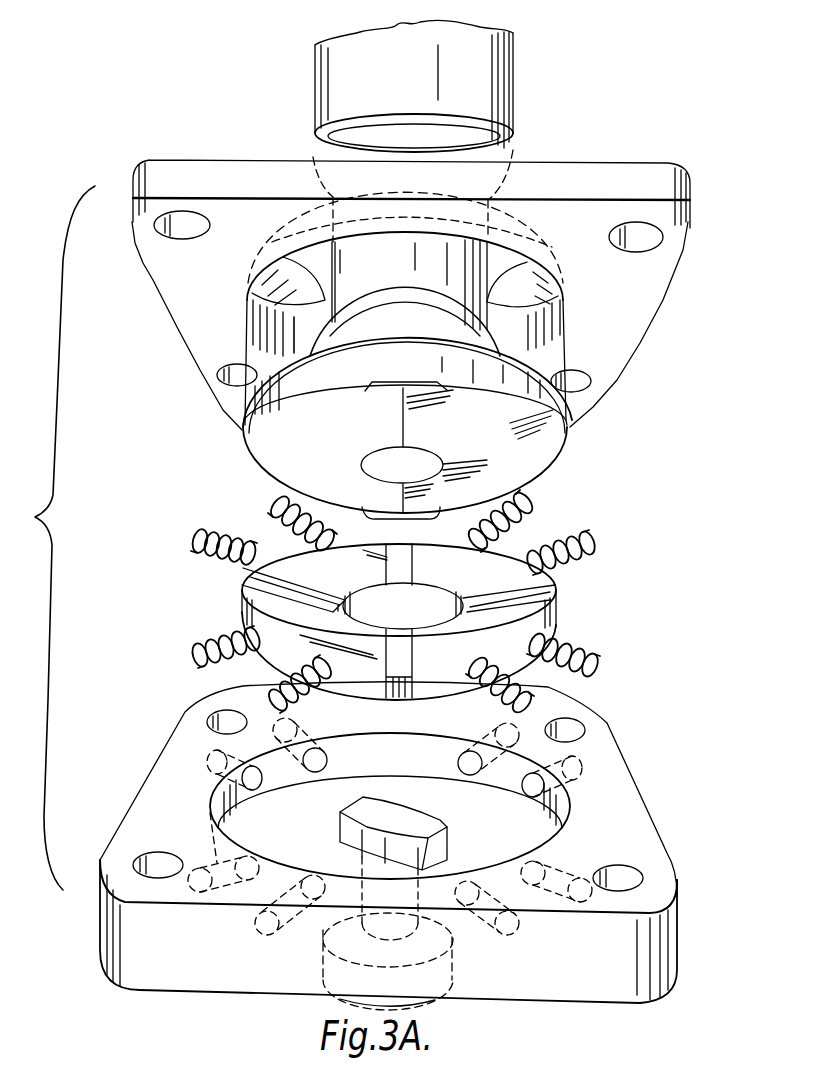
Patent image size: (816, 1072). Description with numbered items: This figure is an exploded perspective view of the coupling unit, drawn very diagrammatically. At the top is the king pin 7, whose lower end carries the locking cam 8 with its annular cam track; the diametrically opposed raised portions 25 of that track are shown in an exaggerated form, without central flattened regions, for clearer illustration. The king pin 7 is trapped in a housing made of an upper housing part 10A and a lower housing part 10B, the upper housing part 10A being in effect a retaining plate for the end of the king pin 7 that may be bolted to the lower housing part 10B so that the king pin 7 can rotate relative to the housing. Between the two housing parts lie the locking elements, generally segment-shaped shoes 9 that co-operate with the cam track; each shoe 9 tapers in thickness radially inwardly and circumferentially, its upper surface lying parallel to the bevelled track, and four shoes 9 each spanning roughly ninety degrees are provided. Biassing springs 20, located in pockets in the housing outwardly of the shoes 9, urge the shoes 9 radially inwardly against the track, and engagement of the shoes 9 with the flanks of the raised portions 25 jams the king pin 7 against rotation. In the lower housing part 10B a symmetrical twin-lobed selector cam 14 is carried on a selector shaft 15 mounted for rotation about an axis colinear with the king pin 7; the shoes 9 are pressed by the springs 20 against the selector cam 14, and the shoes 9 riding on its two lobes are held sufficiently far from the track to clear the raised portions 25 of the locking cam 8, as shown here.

The king pin 7 is at (315, 86).
The upper housing part 10A is at (593, 162).
The locking cam 8 is at (527, 457).
The raised portions 25 is at (404, 454).
The shoes 9 is at (260, 586).
The biassing springs 20 is at (597, 536).
The lower housing part 10B is at (627, 830).
The selector cam 14 is at (440, 821).
The selector shaft 15 is at (447, 950).